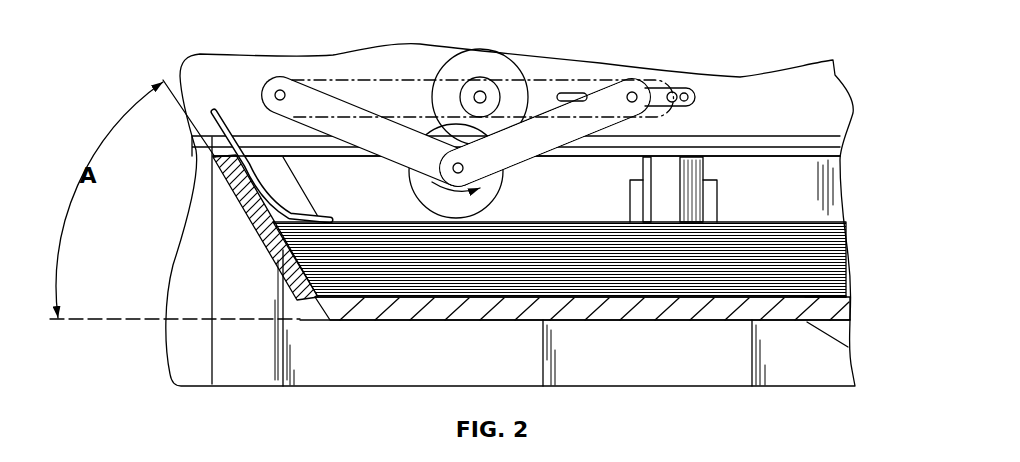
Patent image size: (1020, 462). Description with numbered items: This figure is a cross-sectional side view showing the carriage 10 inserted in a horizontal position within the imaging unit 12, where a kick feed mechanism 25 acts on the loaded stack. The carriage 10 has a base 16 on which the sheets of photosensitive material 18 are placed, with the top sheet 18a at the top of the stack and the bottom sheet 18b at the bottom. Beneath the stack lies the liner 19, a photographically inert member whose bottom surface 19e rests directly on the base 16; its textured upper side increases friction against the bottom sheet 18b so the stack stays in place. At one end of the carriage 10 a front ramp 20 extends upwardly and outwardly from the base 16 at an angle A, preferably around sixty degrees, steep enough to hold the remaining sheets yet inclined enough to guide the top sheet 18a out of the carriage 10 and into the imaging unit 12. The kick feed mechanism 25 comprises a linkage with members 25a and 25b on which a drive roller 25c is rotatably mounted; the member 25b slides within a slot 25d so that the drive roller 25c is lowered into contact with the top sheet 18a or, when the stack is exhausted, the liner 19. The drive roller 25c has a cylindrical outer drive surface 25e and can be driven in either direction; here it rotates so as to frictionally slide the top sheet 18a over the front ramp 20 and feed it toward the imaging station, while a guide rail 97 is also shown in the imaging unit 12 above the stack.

The carriage 10 is at (659, 323).
The imaging unit 12 is at (657, 66).
The base 16 is at (793, 300).
The sheets of photosensitive material 18 is at (588, 253).
The top sheet 18a is at (232, 110).
The bottom sheet 18b is at (810, 318).
The liner 19 is at (848, 317).
The bottom surface 19e is at (840, 342).
The front ramp 20 is at (243, 206).
The kick feed mechanism 25 is at (510, 113).
The linkage member 25a is at (381, 133).
The linkage member 25b is at (543, 133).
The drive roller 25c is at (504, 186).
The slot 25d is at (690, 92).
The outer drive surface 25e is at (412, 198).
The lower guide rail 97 is at (773, 155).